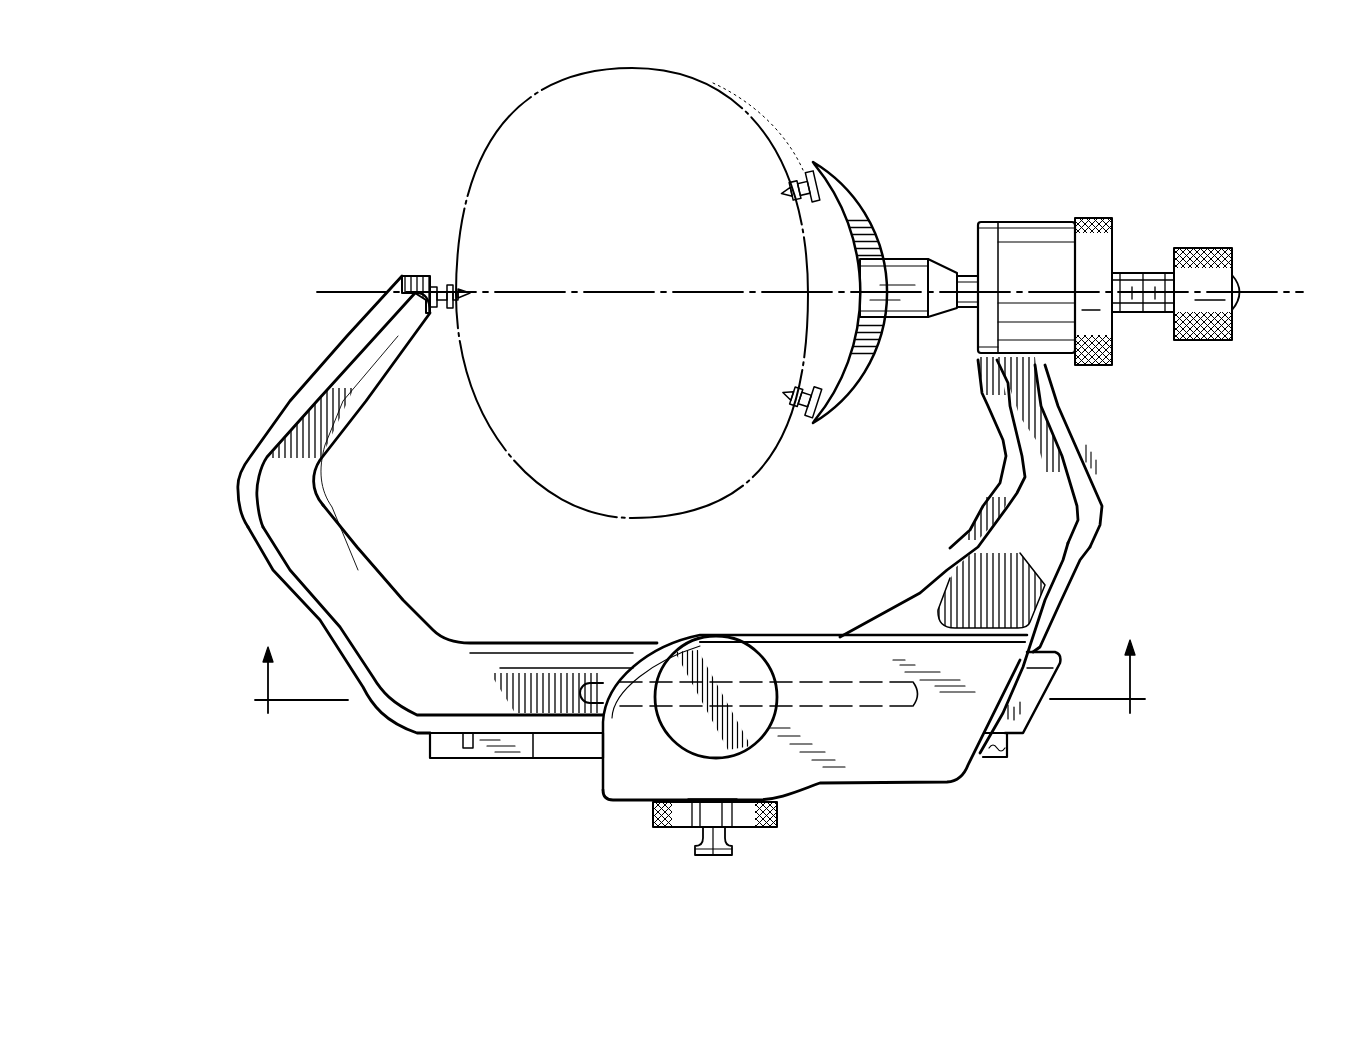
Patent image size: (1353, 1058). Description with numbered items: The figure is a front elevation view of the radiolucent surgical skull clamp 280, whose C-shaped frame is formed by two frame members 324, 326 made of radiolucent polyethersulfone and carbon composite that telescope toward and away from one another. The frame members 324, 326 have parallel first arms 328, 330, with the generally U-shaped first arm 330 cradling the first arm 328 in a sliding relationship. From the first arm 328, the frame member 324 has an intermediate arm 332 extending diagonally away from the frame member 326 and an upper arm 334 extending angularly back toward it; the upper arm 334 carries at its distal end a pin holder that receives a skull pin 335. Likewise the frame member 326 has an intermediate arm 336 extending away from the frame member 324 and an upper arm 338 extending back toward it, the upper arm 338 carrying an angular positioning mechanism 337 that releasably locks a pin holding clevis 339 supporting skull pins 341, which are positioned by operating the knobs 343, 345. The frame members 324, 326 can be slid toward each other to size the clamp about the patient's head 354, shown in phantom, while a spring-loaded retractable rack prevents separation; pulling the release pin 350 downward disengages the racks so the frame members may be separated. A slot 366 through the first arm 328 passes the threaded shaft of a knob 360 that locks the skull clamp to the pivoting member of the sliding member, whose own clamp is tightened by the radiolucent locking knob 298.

The radiolucent surgical skull clamp 280 is at (287, 272).
The frame member 324 is at (237, 480).
The upper arm 334 is at (295, 400).
The intermediate arm 332 is at (300, 600).
The upper arm 338 is at (1068, 428).
The intermediate arm 336 is at (1074, 586).
The frame member 326 is at (1103, 496).
The first arm 328 is at (1064, 652).
The skull pin 335 is at (445, 285).
The patient's head 354 is at (757, 123).
The skull pins 341 is at (822, 163).
The pin holding clevis 339 is at (875, 218).
The angular positioning mechanism 337 is at (1010, 222).
The knob 343 is at (1100, 218).
The knob 345 is at (1235, 250).
The first arm 330 is at (606, 790).
The knob 360 is at (710, 738).
The slot 366 is at (598, 692).
The radiolucent locking knob 298 is at (664, 828).
The release pin 350 is at (725, 840).